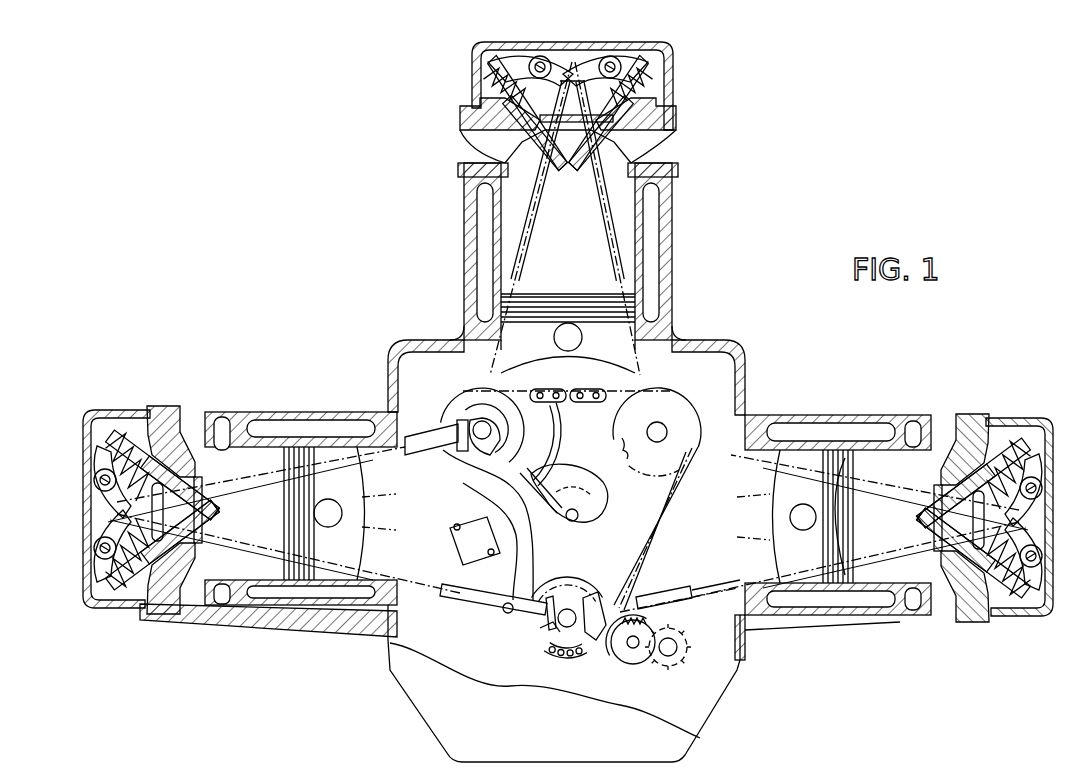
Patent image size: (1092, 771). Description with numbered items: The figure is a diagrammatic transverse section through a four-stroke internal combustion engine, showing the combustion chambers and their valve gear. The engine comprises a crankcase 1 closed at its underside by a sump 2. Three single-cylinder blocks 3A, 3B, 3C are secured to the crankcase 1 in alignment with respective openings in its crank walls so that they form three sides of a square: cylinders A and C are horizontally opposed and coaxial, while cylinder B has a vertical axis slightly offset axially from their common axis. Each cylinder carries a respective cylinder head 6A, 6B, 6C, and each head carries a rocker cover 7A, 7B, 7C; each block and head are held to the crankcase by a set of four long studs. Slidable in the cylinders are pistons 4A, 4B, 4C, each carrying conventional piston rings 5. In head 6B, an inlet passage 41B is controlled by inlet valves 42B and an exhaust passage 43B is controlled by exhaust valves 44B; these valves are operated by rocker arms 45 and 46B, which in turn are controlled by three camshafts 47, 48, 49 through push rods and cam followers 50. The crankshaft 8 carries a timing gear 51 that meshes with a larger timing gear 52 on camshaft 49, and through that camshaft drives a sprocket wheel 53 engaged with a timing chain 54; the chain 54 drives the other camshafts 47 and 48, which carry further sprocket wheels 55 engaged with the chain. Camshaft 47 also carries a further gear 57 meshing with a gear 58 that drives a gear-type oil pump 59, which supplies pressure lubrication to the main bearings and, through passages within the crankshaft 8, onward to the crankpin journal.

The crankcase 1 is at (400, 338).
The sump 2 is at (750, 650).
The single-cylinder block 3A is at (305, 407).
The single-cylinder block 3B is at (457, 232).
The single-cylinder block 3C is at (803, 415).
The piston 4A is at (333, 548).
The piston 4B is at (612, 336).
The piston 4C is at (818, 560).
The piston rings 5 is at (845, 458).
The cylinder head 6A is at (160, 410).
The cylinder head 6B is at (678, 121).
The cylinder head 6C is at (982, 440).
The rocker cover 7A is at (86, 610).
The rocker cover 7B is at (668, 50).
The rocker cover 7C is at (1032, 623).
The crankshaft 8 is at (594, 506).
The inlet passage 41B is at (490, 155).
The inlet valve 42B is at (492, 98).
The exhaust passage 43B is at (657, 153).
The exhaust valve 44B is at (660, 157).
The rocker arm 45 is at (505, 64).
The rocker arm 46B is at (630, 64).
The camshaft 47 is at (541, 648).
The camshaft 48 is at (664, 428).
The camshaft 49 is at (480, 428).
The cam follower 50 is at (645, 373).
The timing gear 51 is at (573, 484).
The timing gear 52 is at (565, 516).
The sprocket wheel 53 is at (562, 645).
The timing chain 54 is at (648, 535).
The sprocket wheel 55 is at (644, 434).
The gear 57 is at (593, 632).
The gear 58 is at (621, 648).
The oil pump 59 is at (675, 672).